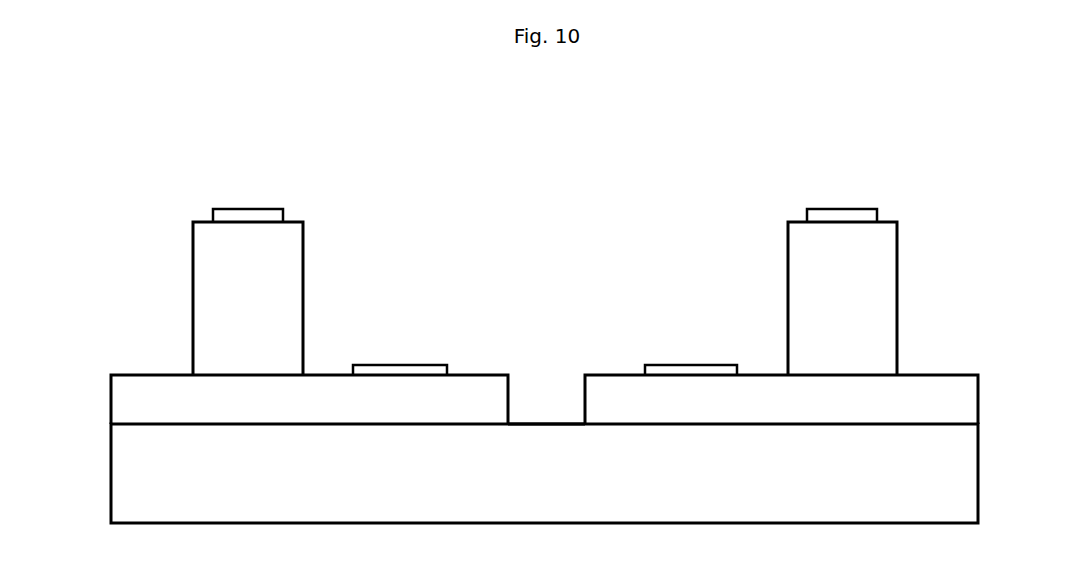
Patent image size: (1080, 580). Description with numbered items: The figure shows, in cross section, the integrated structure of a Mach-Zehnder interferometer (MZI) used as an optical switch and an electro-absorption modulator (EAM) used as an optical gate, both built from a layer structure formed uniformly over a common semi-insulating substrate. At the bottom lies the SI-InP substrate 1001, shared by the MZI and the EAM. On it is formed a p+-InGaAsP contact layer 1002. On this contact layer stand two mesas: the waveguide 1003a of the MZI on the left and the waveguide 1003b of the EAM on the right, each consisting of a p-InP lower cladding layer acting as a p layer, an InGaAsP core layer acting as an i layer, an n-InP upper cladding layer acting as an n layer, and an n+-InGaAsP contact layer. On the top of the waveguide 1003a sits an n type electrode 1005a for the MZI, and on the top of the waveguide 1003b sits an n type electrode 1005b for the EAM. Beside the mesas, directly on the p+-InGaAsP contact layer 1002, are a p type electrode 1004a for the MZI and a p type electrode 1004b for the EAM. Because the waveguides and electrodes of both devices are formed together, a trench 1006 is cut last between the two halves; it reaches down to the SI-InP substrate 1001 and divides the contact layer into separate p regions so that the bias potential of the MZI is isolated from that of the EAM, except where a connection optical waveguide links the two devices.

The SI-InP substrate 1001 is at (967, 492).
The p+-InGaAsP contact layer 1002 is at (120, 401).
The waveguide of the MZI 1003a is at (204, 300).
The waveguide of the EAM 1003b is at (890, 298).
The p type electrode for the MZI 1004a is at (404, 363).
The p type electrode for the EAM 1004b is at (693, 363).
The n type electrode for the MZI 1005a is at (251, 208).
The n type electrode for the EAM 1005b is at (841, 208).
The trench 1006 is at (543, 390).